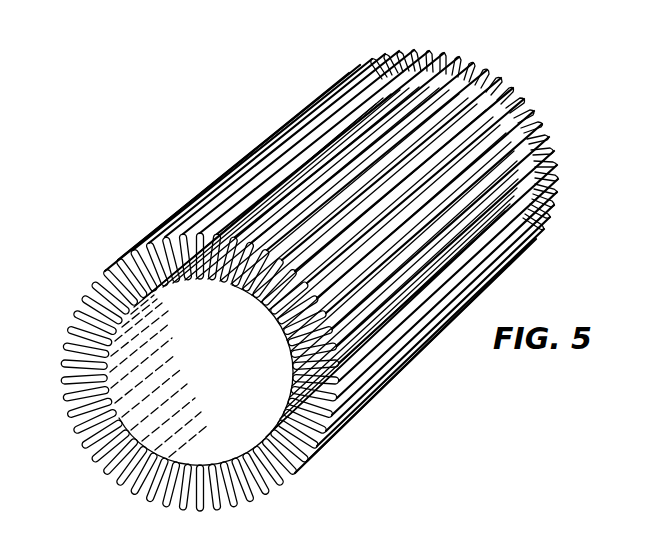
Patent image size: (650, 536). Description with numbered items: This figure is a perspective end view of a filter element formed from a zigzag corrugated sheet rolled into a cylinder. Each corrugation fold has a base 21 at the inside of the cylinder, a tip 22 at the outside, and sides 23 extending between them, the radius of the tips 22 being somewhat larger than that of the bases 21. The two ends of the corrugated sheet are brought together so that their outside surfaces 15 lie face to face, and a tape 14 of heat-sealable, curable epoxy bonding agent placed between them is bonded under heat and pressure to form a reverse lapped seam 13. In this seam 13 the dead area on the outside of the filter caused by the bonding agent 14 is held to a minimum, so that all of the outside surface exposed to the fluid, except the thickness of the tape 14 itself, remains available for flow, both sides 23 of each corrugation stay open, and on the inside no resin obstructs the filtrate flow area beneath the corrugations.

The seam 13 is at (514, 84).
The tape of bonding agent 14 is at (256, 305).
The outside surfaces 15 is at (255, 301).
The base 21 is at (292, 372).
The tip 22 is at (556, 163).
The sides 23 is at (491, 72).